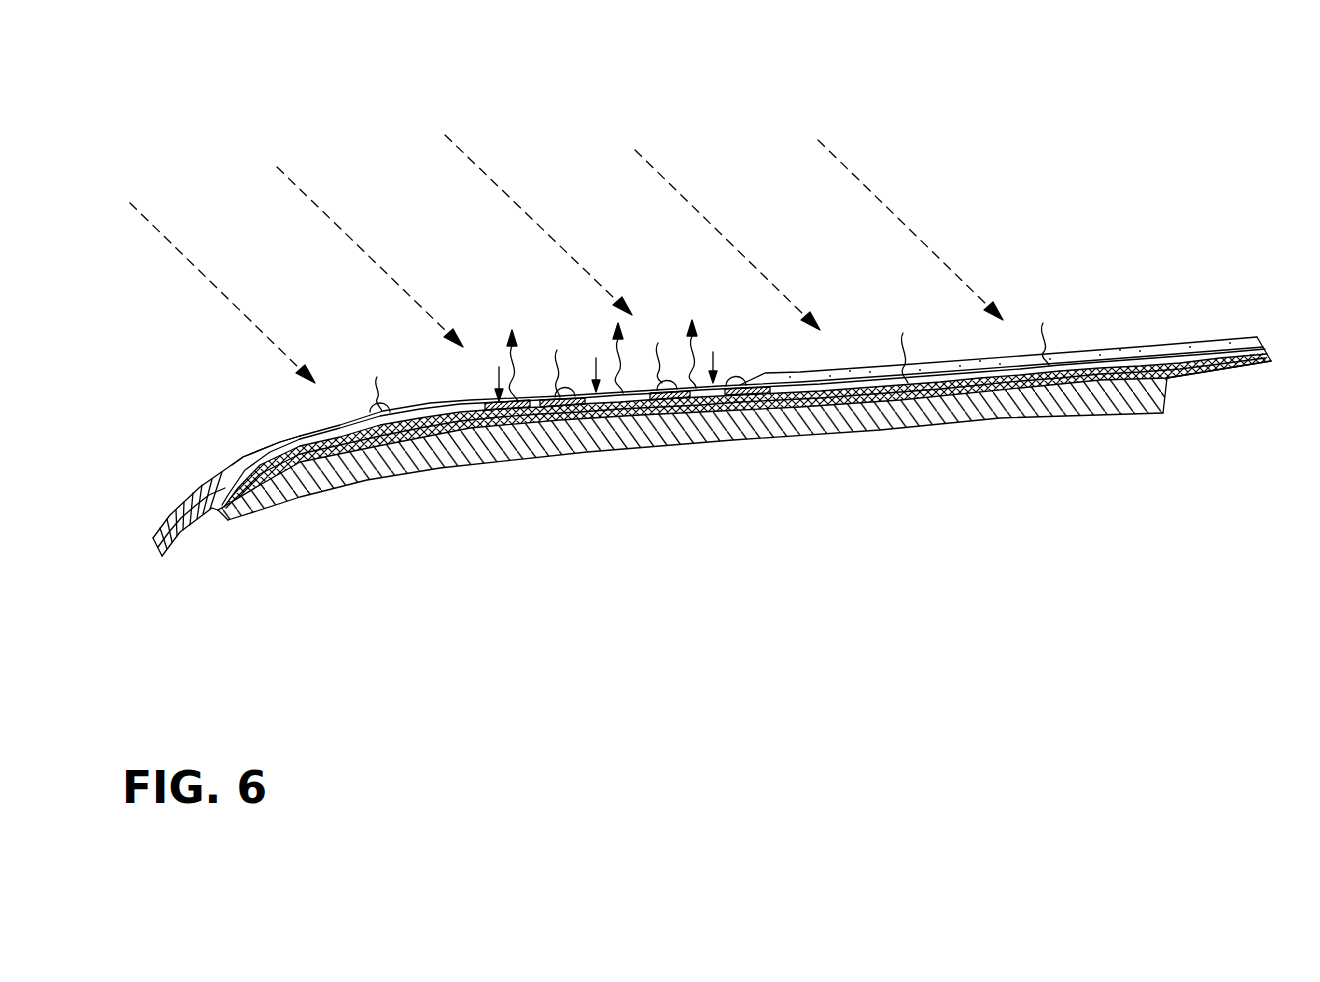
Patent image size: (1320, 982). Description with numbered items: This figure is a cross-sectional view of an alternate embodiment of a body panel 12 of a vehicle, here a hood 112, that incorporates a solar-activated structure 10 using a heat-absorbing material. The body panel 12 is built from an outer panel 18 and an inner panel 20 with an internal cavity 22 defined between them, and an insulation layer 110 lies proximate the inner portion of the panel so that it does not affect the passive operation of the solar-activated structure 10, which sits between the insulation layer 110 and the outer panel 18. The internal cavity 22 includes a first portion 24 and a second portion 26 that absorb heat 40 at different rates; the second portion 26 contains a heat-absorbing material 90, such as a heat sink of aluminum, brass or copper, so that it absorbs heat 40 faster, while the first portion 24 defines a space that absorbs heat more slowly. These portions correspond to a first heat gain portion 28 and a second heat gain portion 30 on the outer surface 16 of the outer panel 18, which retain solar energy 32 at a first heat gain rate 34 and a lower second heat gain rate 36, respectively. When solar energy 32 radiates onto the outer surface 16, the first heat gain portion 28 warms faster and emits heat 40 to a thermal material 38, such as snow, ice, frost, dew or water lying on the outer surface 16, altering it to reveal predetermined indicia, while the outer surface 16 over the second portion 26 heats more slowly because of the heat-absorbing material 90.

The solar-activated structure 10 is at (508, 436).
The body panel 12 is at (1233, 300).
The outer surface 16 is at (642, 390).
The outer panel 18 is at (1250, 336).
The inner panel 20 is at (1255, 362).
The internal cavity 22 is at (633, 415).
The first portion 24 is at (541, 412).
The second portion 26 is at (820, 398).
The first heat gain portion 28 is at (683, 378).
The second heat gain portion 30 is at (252, 435).
The solar energy 32 is at (474, 158).
The first heat gain rate 34 is at (577, 388).
The second heat gain rate 36 is at (386, 420).
The thermal material 38 is at (1092, 358).
The heat 40 is at (698, 345).
The heat-absorbing material 90 is at (345, 465).
The insulation layer 110 is at (1108, 420).
The hood 112 is at (162, 505).